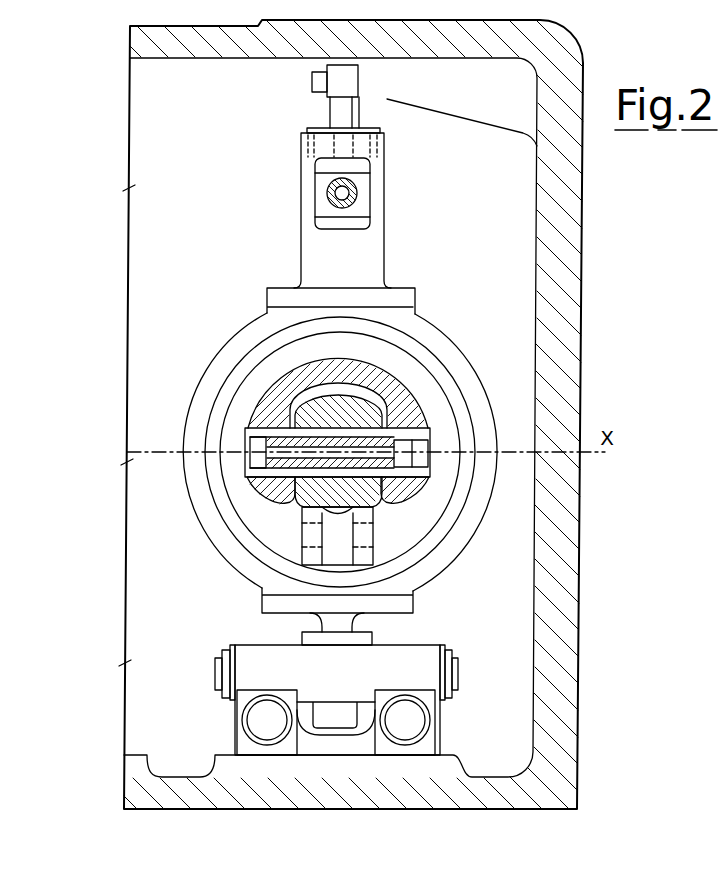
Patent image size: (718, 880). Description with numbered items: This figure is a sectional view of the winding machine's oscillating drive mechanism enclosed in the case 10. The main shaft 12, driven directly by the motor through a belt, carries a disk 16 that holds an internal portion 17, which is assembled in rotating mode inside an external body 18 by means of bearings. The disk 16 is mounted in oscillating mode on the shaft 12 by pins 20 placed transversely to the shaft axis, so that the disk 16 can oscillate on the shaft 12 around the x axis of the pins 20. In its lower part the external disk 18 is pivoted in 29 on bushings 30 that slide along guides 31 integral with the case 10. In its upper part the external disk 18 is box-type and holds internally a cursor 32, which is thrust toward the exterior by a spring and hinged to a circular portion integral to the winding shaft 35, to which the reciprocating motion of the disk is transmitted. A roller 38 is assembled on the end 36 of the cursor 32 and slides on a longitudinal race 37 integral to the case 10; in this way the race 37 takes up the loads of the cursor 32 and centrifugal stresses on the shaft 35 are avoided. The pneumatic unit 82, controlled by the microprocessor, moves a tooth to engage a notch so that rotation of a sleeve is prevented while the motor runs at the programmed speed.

The case 10 is at (557, 49).
The main shaft 12 is at (380, 500).
The disk 16 is at (208, 337).
The internal portion 17 is at (405, 403).
The external body 18 is at (372, 262).
The pins 20 is at (420, 470).
The pivot 29 is at (413, 658).
The bushings 30 is at (430, 738).
The guides 31 is at (252, 720).
The cursor 32 is at (362, 183).
The winding shaft 35 is at (328, 189).
The end of the cursor 36 is at (359, 113).
The longitudinal race 37 is at (350, 75).
The roller 38 is at (342, 112).
The pneumatic unit 82 is at (709, 448).